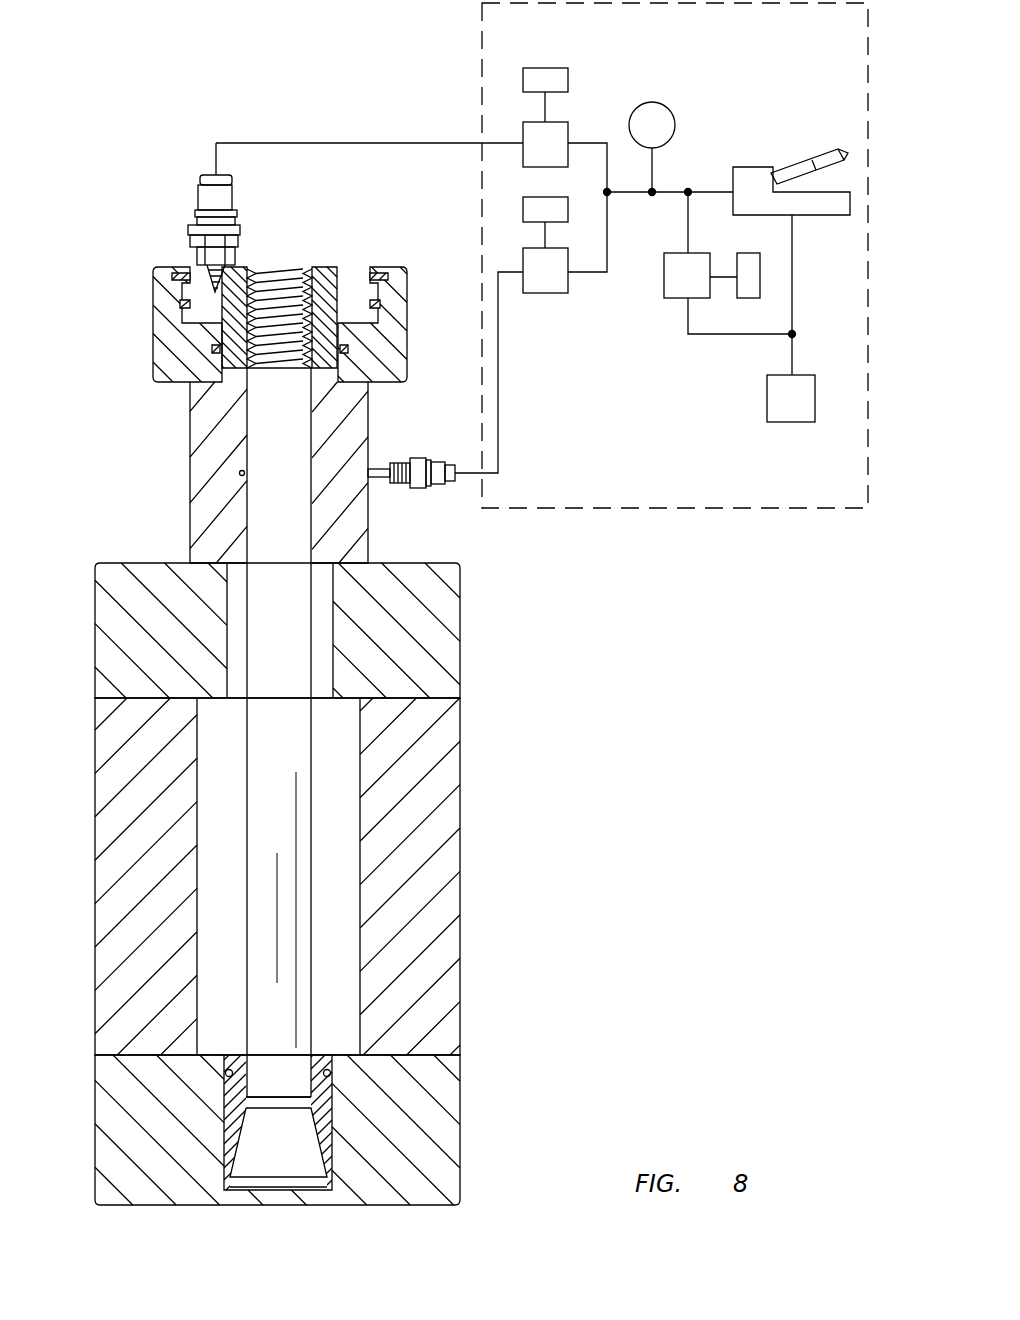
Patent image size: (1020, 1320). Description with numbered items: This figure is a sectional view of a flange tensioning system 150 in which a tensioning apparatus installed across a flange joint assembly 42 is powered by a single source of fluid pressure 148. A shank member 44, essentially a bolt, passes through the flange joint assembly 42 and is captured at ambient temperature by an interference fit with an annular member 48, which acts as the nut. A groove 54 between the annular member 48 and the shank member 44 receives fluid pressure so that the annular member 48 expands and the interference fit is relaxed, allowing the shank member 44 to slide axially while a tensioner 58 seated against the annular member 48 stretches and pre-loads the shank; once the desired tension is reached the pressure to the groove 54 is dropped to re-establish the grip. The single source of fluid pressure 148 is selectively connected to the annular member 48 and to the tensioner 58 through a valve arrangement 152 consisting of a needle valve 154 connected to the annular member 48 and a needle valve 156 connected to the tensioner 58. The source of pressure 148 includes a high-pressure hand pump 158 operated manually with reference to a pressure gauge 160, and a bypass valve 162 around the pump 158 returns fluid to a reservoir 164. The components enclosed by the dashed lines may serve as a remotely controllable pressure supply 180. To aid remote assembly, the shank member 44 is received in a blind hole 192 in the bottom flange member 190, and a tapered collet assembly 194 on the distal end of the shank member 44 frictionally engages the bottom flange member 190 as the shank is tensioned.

The flange joint assembly 42 is at (473, 565).
The shank member 44 is at (282, 266).
The annular member 48 is at (190, 457).
The groove 54 is at (240, 476).
The tensioner 58 is at (153, 313).
The source of fluid pressure 148 is at (808, 134).
The flange tensioning system 150 is at (666, 570).
The valve arrangement 152 is at (617, 73).
The needle valve 154 is at (548, 293).
The needle valve 156 is at (560, 122).
The high-pressure hand pump 158 is at (817, 215).
The pressure gauge 160 is at (665, 106).
The bypass valve 162 is at (670, 298).
The reservoir 164 is at (767, 398).
The pressure supply 180 is at (482, 55).
The bottom flange member 190 is at (95, 1140).
The blind hole 192 is at (227, 1043).
The tapered collet assembly 194 is at (323, 1053).